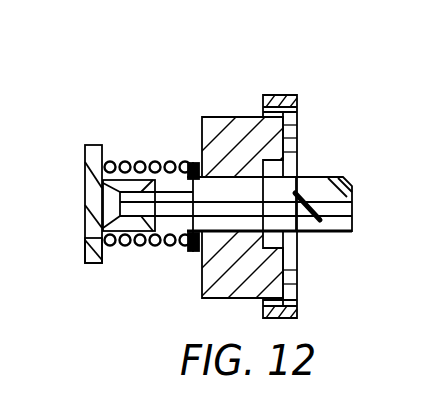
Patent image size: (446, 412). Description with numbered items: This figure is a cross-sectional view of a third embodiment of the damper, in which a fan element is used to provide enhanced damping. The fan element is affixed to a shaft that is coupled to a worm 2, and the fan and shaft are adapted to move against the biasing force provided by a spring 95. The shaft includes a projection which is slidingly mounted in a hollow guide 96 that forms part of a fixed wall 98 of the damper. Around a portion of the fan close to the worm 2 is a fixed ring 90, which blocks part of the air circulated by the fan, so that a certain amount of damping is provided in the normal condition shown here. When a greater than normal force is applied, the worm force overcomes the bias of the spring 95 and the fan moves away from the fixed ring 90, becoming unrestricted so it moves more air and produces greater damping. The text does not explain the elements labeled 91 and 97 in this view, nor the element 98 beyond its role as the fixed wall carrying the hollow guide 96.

The worm 2 is at (313, 177).
The fixed ring 90 is at (272, 95).
The block 91 is at (222, 117).
The spring 95 is at (148, 165).
The hollow guide 96 is at (104, 205).
The plate 97 is at (86, 175).
The fixed wall 98 is at (86, 246).